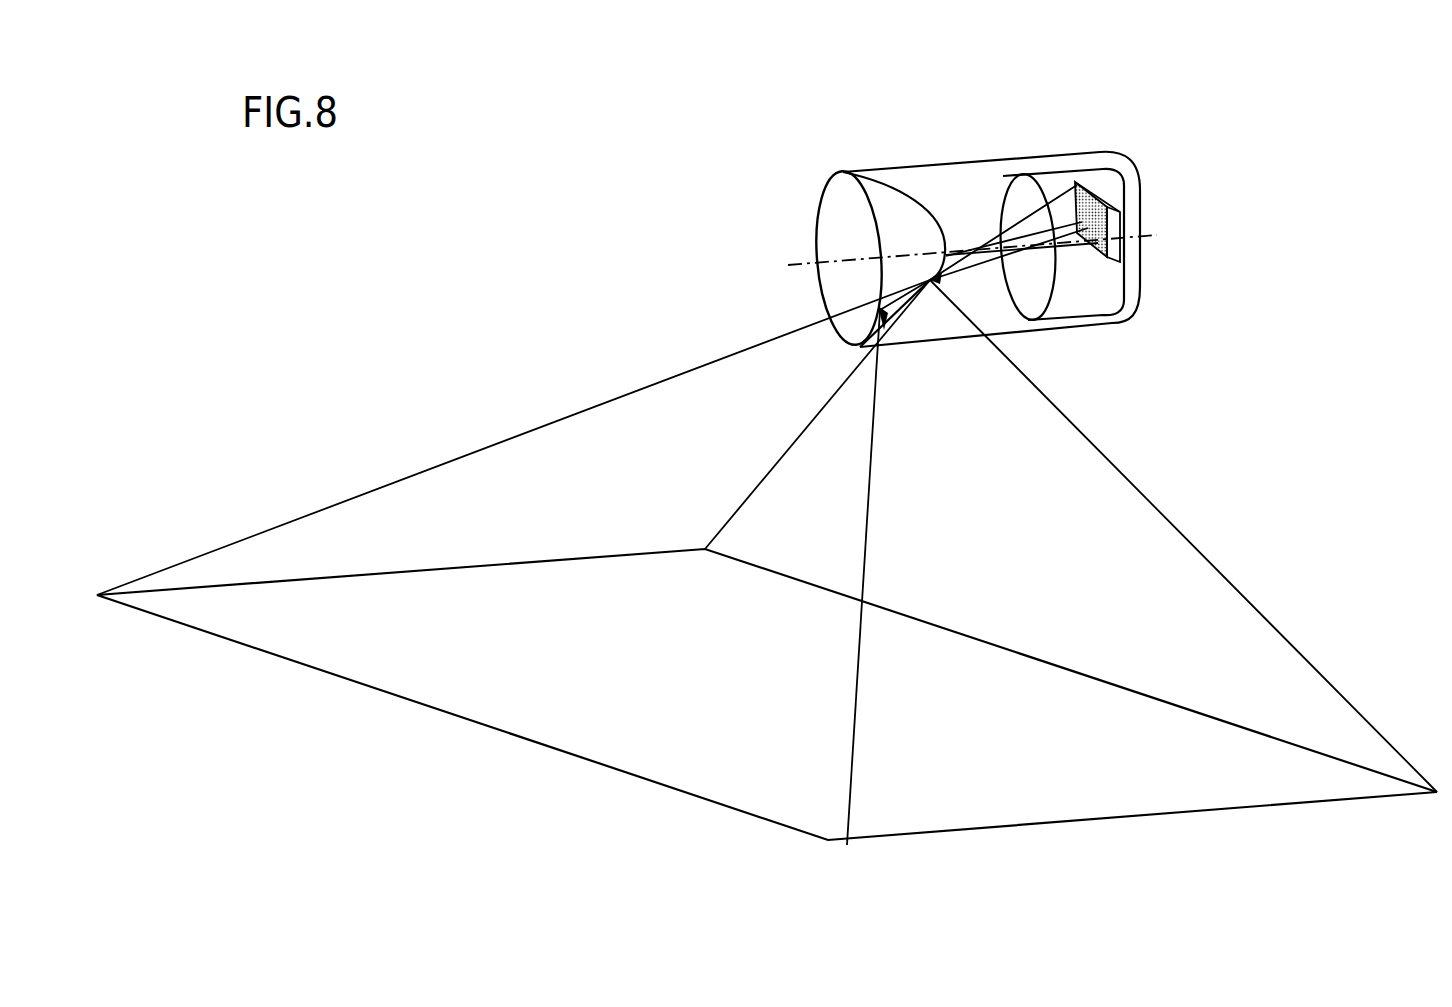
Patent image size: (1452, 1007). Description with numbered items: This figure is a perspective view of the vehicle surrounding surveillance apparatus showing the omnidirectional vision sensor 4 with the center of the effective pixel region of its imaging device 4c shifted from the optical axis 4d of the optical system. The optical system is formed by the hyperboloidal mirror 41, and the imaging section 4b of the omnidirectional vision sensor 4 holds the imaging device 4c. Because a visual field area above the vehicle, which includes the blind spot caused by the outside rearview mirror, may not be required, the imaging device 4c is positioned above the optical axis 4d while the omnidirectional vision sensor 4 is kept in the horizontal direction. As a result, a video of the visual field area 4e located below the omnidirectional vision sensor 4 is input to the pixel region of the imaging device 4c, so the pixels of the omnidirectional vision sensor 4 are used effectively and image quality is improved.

The omnidirectional vision sensor 4 is at (820, 175).
The hyperboloidal mirror 41 is at (896, 198).
The imaging section 4b is at (1093, 292).
The imaging device 4c is at (1093, 190).
The optical axis 4d is at (847, 253).
The visual field area 4e is at (563, 593).